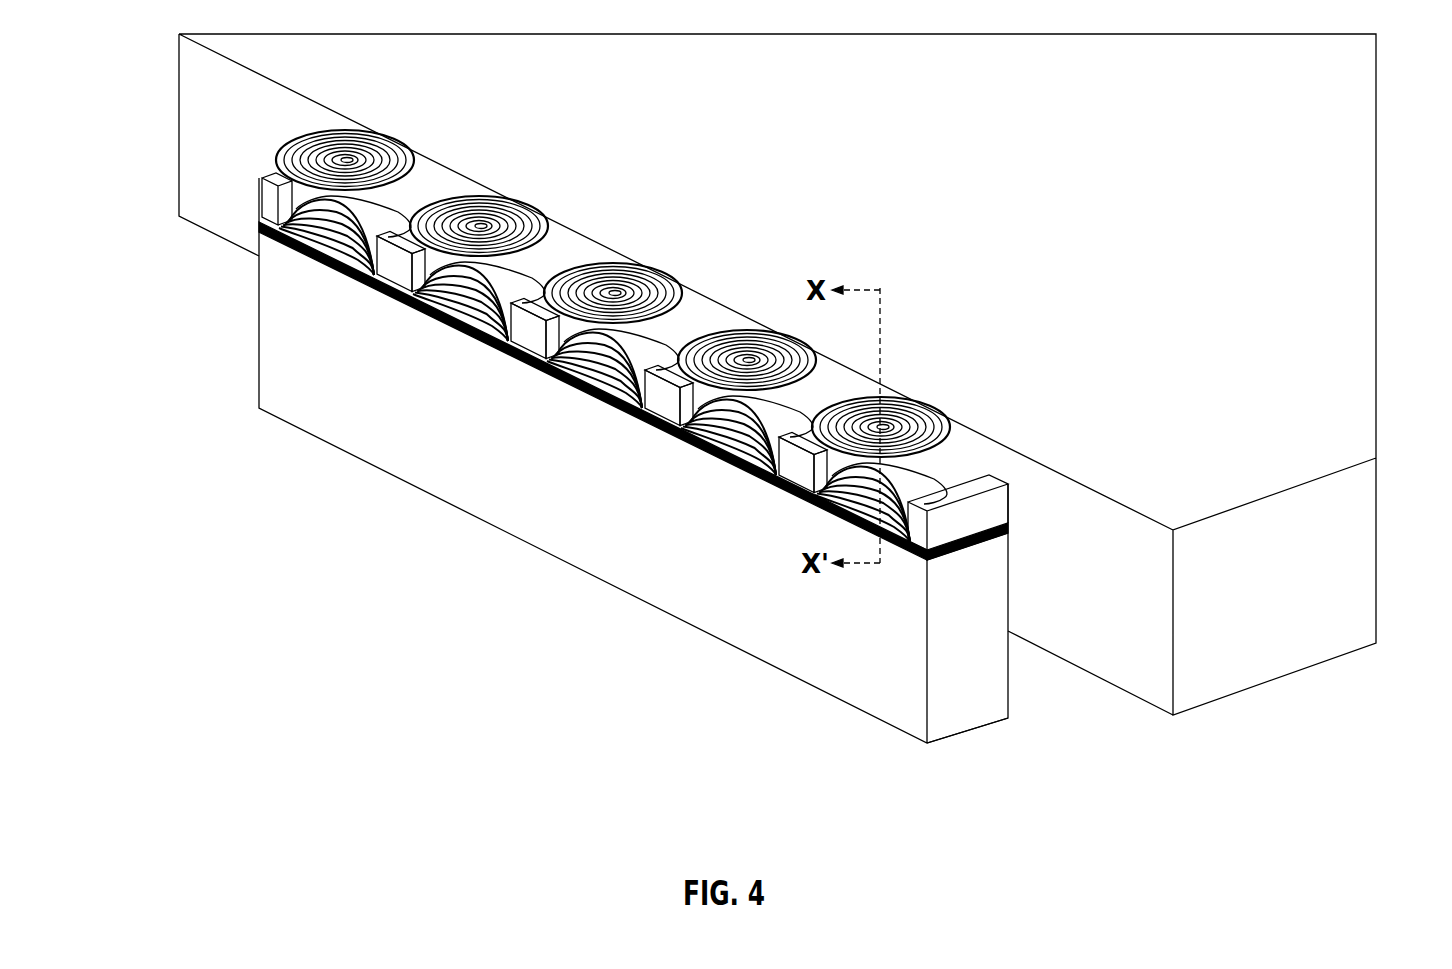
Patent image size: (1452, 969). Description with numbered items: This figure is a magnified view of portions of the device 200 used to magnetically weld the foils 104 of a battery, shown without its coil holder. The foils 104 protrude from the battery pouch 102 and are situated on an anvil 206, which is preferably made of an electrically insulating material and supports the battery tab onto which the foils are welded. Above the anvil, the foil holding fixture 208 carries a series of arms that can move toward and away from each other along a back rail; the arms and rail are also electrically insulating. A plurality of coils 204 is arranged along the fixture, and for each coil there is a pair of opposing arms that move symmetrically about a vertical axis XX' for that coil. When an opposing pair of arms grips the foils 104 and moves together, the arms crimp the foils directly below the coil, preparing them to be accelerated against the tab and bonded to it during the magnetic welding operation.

The pouch 102 is at (1363, 132).
The foils 104 is at (897, 490).
The device 200 is at (878, 683).
The coils 204 is at (920, 401).
The anvil 206 is at (993, 682).
The foil holding fixture 208 is at (950, 527).